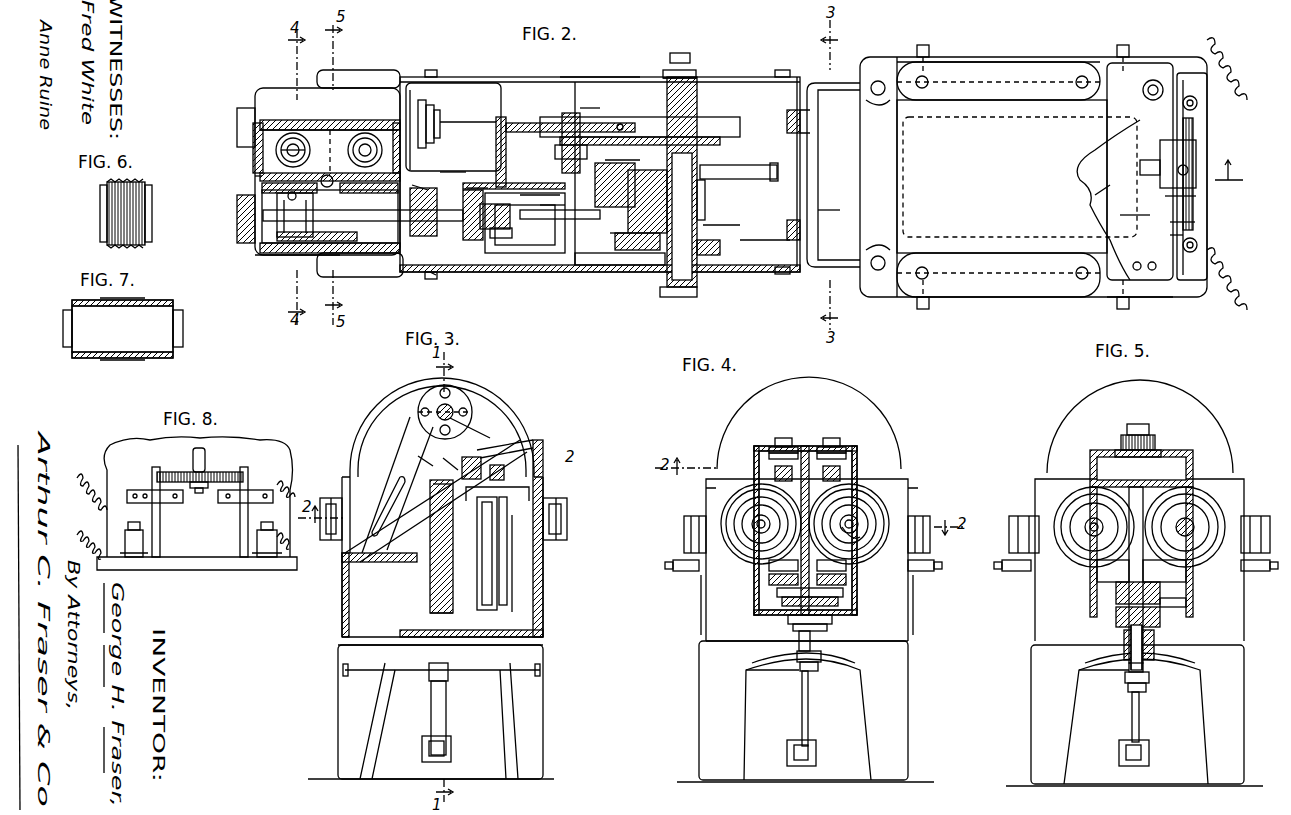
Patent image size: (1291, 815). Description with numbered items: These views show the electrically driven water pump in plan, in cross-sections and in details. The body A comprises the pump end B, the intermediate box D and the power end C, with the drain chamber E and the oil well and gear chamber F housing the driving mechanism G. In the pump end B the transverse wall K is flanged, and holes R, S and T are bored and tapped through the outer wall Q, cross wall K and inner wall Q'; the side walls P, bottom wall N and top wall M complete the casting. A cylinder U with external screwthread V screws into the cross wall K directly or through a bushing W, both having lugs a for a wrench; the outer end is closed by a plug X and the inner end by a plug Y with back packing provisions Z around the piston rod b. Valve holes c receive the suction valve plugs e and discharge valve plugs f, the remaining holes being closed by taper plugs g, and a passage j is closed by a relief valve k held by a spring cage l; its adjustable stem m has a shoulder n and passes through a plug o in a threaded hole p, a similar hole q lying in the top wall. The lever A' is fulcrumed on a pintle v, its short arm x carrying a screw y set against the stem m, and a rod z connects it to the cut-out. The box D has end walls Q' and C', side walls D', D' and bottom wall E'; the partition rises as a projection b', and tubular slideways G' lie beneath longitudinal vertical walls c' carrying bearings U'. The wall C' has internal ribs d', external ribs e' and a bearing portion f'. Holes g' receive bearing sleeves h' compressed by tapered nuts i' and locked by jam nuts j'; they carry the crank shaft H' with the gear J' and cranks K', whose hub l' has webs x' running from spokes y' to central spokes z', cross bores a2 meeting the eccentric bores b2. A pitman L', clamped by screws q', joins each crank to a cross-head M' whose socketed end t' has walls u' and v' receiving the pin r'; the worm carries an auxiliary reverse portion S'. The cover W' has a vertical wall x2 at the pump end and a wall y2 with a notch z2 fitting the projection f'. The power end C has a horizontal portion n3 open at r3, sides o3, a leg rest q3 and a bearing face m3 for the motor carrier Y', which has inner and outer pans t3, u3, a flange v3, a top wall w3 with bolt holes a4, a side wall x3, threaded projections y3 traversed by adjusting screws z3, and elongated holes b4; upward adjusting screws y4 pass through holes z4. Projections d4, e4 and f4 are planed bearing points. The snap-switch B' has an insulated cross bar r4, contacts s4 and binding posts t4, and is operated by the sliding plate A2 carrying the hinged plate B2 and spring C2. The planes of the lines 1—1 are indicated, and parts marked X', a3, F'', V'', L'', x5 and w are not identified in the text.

In FIG. 2, the pump end B is at (315, 163).
In FIG. 2, the plug X is at (234, 127).
In FIG. 2, the bearing cap X' is at (236, 219).
In FIG. 3, the bearing cap X' is at (468, 398).
In FIG. 2, the cylinder a3 is at (375, 70).
In FIG. 3, the cylinder a3 is at (528, 414).
In FIG. 2, the hole T is at (370, 277).
In FIG. 2, the side walls P is at (325, 118).
In FIG. 5, the side walls P is at (1090, 460).
In FIG. 2, the discharge valve plugs f is at (287, 146).
In FIG. 4, the discharge valve plugs f is at (807, 470).
In FIG. 2, the passage j is at (283, 155).
In FIG. 4, the passage j is at (808, 530).
In FIG. 5, the passage j is at (1136, 564).
In FIG. 2, the transverse wall K is at (360, 145).
In FIG. 2, the back packing provisions Z is at (337, 160).
In FIG. 2, the outer wall Q is at (246, 171).
In FIG. 2, the valve holes c is at (330, 185).
In FIG. 4, the valve holes c is at (814, 530).
In FIG. 2, the bushing W is at (363, 207).
In FIG. 5, the bushing W is at (1091, 527).
In FIG. 6, the bushing W is at (137, 216).
In FIG. 2, the external screwthread V is at (312, 216).
In FIG. 7, the external screwthread V is at (122, 342).
In FIG. 2, the cylinder U is at (326, 231).
In FIG. 4, the cylinder U is at (846, 572).
In FIG. 5, the cylinder U is at (1136, 549).
In FIG. 7, the cylinder U is at (123, 328).
In FIG. 2, the hole R is at (258, 255).
In FIG. 2, the hole S is at (319, 266).
In FIG. 2, the side projections e4 is at (430, 70).
In FIG. 4, the side projections e4 is at (706, 488).
In FIG. 2, the side walls D' is at (600, 171).
In FIG. 3, the side walls D' is at (488, 622).
In FIG. 2, the intermediate box D is at (580, 64).
In FIG. 3, the intermediate box D is at (436, 501).
In FIG. 4, the intermediate box D is at (834, 574).
In FIG. 2, the body A is at (620, 64).
In FIG. 3, the body A is at (556, 543).
In FIG. 2, the pillar F'' is at (456, 135).
In FIG. 2, the narrow projection b' is at (457, 128).
In FIG. 2, the drain chamber E is at (452, 161).
In FIG. 2, the inner wall Q' is at (421, 179).
In FIG. 2, the tubular slideways G' is at (476, 173).
In FIG. 3, the tubular slideways G' is at (510, 519).
In FIG. 2, the cross-head M' is at (510, 185).
In FIG. 2, the piston rod b is at (461, 215).
In FIG. 5, the piston rod b is at (1185, 527).
In FIG. 2, the plug Y is at (423, 223).
In FIG. 2, the auxiliary reverse portion S' is at (510, 226).
In FIG. 2, the cross-head pin r' is at (495, 215).
In FIG. 2, the vertical walls c' is at (570, 116).
In FIG. 3, the vertical walls c' is at (470, 458).
In FIG. 2, the vertical shaft V'' is at (557, 143).
In FIG. 2, the wall u' is at (540, 196).
In FIG. 2, the socketed end t' is at (552, 196).
In FIG. 2, the screws q' is at (584, 162).
In FIG. 2, the rod L'' is at (560, 214).
In FIG. 2, the wall v' is at (516, 235).
In FIG. 2, the cranks K' is at (668, 179).
In FIG. 3, the cranks K' is at (514, 557).
In FIG. 2, the web x' is at (615, 185).
In FIG. 3, the web x' is at (447, 546).
In FIG. 2, the bearings U' is at (590, 98).
In FIG. 2, the bearing sleeves h' is at (658, 164).
In FIG. 3, the bearing sleeves h' is at (452, 523).
In FIG. 2, the tapered nuts i' is at (643, 167).
In FIG. 2, the spoke y' is at (622, 150).
In FIG. 2, the pitman L' is at (640, 112).
In FIG. 3, the pitman L' is at (491, 561).
In FIG. 2, the jam nuts j' is at (678, 173).
In FIG. 2, the crank shaft H' is at (678, 196).
In FIG. 2, the gear J' is at (739, 159).
In FIG. 3, the gear J' is at (447, 616).
In FIG. 2, the cross bore a2 is at (703, 195).
In FIG. 2, the driving mechanism G is at (726, 217).
In FIG. 2, the oil well and gear chamber F is at (765, 244).
In FIG. 3, the oil well and gear chamber F is at (518, 563).
In FIG. 2, the holes g' is at (720, 251).
In FIG. 2, the bore b2 is at (633, 237).
In FIG. 2, the central spoke z' is at (619, 236).
In FIG. 2, the internal ribs d' is at (784, 118).
In FIG. 2, the projections d4 is at (800, 230).
In FIG. 3, the projections d4 is at (394, 506).
In FIG. 2, the external ribs e' is at (814, 121).
In FIG. 3, the external ribs e' is at (421, 452).
In FIG. 2, the side projections f4 is at (782, 70).
In FIG. 4, the side projections f4 is at (706, 605).
In FIG. 2, the end wall C' is at (833, 175).
In FIG. 3, the end wall C' is at (436, 484).
In FIG. 2, the horizontal portion n3 is at (830, 199).
In FIG. 3, the horizontal portion n3 is at (379, 569).
In FIG. 2, the power end C is at (1033, 163).
In FIG. 3, the power end C is at (431, 578).
In FIG. 2, the motor carrier Y' is at (1002, 176).
In FIG. 4, the motor carrier Y' is at (814, 630).
In FIG. 2, the top wall w3 is at (1020, 177).
In FIG. 2, the bolt holes a4 is at (965, 70).
In FIG. 2, the slot x5 is at (965, 297).
In FIG. 2, the side wall x3 is at (970, 57).
In FIG. 2, the elongated holes b4 is at (879, 175).
In FIG. 2, the inner pan t3 is at (878, 175).
In FIG. 2, the screwthreaded projection portions y3 is at (925, 305).
In FIG. 4, the screwthreaded projection portions y3 is at (801, 557).
In FIG. 2, the flange v3 is at (1135, 57).
In FIG. 2, the adjusting screws z3 is at (1117, 303).
In FIG. 4, the adjusting screws z3 is at (675, 562).
In FIG. 2, the leg rest q3 is at (1190, 280).
In FIG. 4, the leg rest q3 is at (895, 641).
In FIG. 2, the outer pan u3 is at (1121, 197).
In FIG. 2, the snap-switch B' is at (1209, 176).
In FIG. 8, the snap-switch B' is at (186, 501).
In FIG. 2, the insulated cross bar r4 is at (1200, 130).
In FIG. 8, the insulated cross bar r4 is at (225, 472).
In FIG. 2, the binding posts t4 is at (1200, 105).
In FIG. 8, the binding posts t4 is at (203, 533).
In FIG. 2, the sliding plate A2 is at (1160, 170).
In FIG. 2, the rod z is at (1097, 195).
In FIG. 3, the rod z is at (445, 721).
In FIG. 5, the rod z is at (1148, 613).
In FIG. 2, the swinging plate B2 is at (1160, 178).
In FIG. 2, the spring C2 is at (1196, 196).
In FIG. 2, the opening r3 is at (1130, 224).
In FIG. 2, the bearing face m3 is at (1172, 224).
In FIG. 2, the contacts s4 is at (1161, 236).
In FIG. 8, the contacts s4 is at (160, 503).
In FIG. 2, the upward adjusting screws y4 is at (1130, 255).
In FIG. 2, the holes z4 is at (1157, 255).
In FIG. 2, the section line 1 is at (1235, 174).
In FIG. 3, the sides o3 is at (329, 595).
In FIG. 3, the cover W' is at (505, 410).
In FIG. 4, the cover W' is at (791, 482).
In FIG. 5, the cover W' is at (1140, 426).
In FIG. 3, the vertical wall y2 is at (386, 481).
In FIG. 3, the notch z2 is at (400, 488).
In FIG. 3, the bearing portion f' is at (444, 457).
In FIG. 3, the hub l' is at (494, 506).
In FIG. 3, the bottom wall E' is at (440, 660).
In FIG. 3, the pintle v is at (439, 721).
In FIG. 4, the pintle v is at (772, 684).
In FIG. 5, the pintle v is at (1104, 681).
In FIG. 4, the vertical wall x2 is at (809, 423).
In FIG. 4, the wheel w is at (856, 524).
In FIG. 4, the taper plugs g is at (789, 522).
In FIG. 5, the taper plugs g is at (1127, 424).
In FIG. 4, the lugs a is at (850, 519).
In FIG. 6, the lugs a is at (100, 200).
In FIG. 7, the lugs a is at (122, 329).
In FIG. 4, the suction valve plugs e is at (810, 592).
In FIG. 4, the adjustable stem m is at (815, 650).
In FIG. 5, the adjustable stem m is at (1129, 660).
In FIG. 4, the short arm x is at (821, 671).
In FIG. 5, the short arm x is at (1149, 684).
In FIG. 4, the screw y is at (813, 687).
In FIG. 5, the screw y is at (1123, 696).
In FIG. 4, the lever A' is at (820, 718).
In FIG. 5, the lever A' is at (1150, 717).
In FIG. 5, the bottom wall N is at (1198, 603).
In FIG. 5, the hole q is at (1150, 429).
In FIG. 5, the plug o is at (1145, 534).
In FIG. 5, the top wall M is at (1141, 569).
In FIG. 5, the shoulder n is at (1132, 593).
In FIG. 5, the valve k is at (1145, 606).
In FIG. 5, the spring cage l is at (1181, 596).
In FIG. 5, the threaded hole p is at (1149, 646).